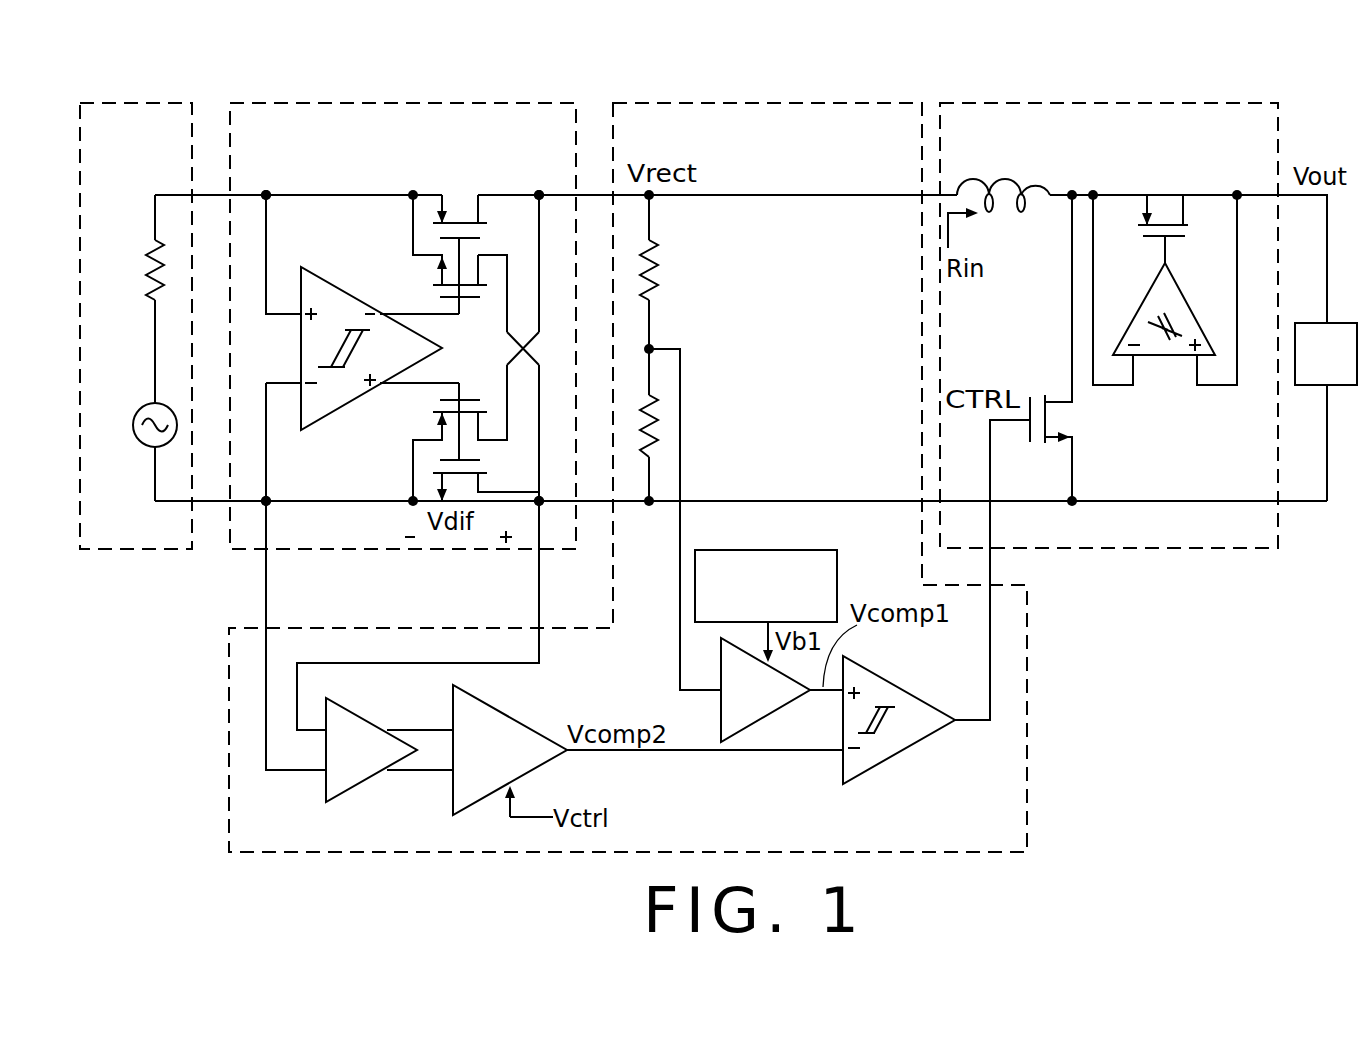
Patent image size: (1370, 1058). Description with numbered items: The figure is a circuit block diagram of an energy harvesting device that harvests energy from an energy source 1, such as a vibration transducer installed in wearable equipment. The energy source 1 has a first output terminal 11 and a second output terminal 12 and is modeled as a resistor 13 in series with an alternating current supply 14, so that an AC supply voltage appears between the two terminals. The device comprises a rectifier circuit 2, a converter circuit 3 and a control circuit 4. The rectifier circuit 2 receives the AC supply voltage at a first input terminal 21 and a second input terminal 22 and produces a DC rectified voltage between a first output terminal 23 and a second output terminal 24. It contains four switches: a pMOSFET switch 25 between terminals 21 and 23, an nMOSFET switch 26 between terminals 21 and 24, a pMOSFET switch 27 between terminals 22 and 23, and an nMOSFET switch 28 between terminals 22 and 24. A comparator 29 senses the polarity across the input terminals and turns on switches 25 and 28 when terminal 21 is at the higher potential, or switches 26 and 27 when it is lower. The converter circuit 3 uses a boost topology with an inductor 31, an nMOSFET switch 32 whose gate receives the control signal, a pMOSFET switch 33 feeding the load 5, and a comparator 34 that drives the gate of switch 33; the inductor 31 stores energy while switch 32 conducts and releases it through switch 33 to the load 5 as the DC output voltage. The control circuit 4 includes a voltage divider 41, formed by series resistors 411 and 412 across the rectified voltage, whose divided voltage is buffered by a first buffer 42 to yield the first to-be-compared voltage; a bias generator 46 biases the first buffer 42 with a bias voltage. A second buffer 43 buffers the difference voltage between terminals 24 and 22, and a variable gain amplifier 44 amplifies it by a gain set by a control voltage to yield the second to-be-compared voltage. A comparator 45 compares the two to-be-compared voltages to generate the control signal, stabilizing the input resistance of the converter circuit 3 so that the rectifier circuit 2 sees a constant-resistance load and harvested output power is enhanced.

The energy source 1 is at (137, 102).
The rectifier circuit 2 is at (503, 102).
The converter circuit 3 is at (1200, 102).
The control circuit 4 is at (840, 102).
The load 5 is at (1337, 387).
The first output terminal 11 is at (188, 195).
The second output terminal 12 is at (190, 503).
The resistor 13 is at (148, 275).
The alternating current supply 14 is at (150, 405).
The first input terminal 21 is at (230, 195).
The second input terminal 22 is at (227, 503).
The first output terminal 23 is at (575, 193).
The second output terminal 24 is at (576, 505).
The switch 25 is at (487, 213).
The switch 26 is at (472, 262).
The switch 27 is at (470, 447).
The switch 28 is at (487, 492).
The comparator 29 is at (367, 307).
The inductor 31 is at (1008, 207).
The switch 32 is at (1057, 397).
The switch 33 is at (1183, 208).
The comparator 34 is at (1200, 322).
The voltage divider 41 is at (719, 348).
The resistor 411 is at (657, 263).
The resistor 412 is at (657, 417).
The first buffer 42 is at (757, 723).
The second buffer 43 is at (360, 715).
The variable gain amplifier 44 is at (483, 705).
The comparator 45 is at (898, 755).
The bias generator 46 is at (808, 548).